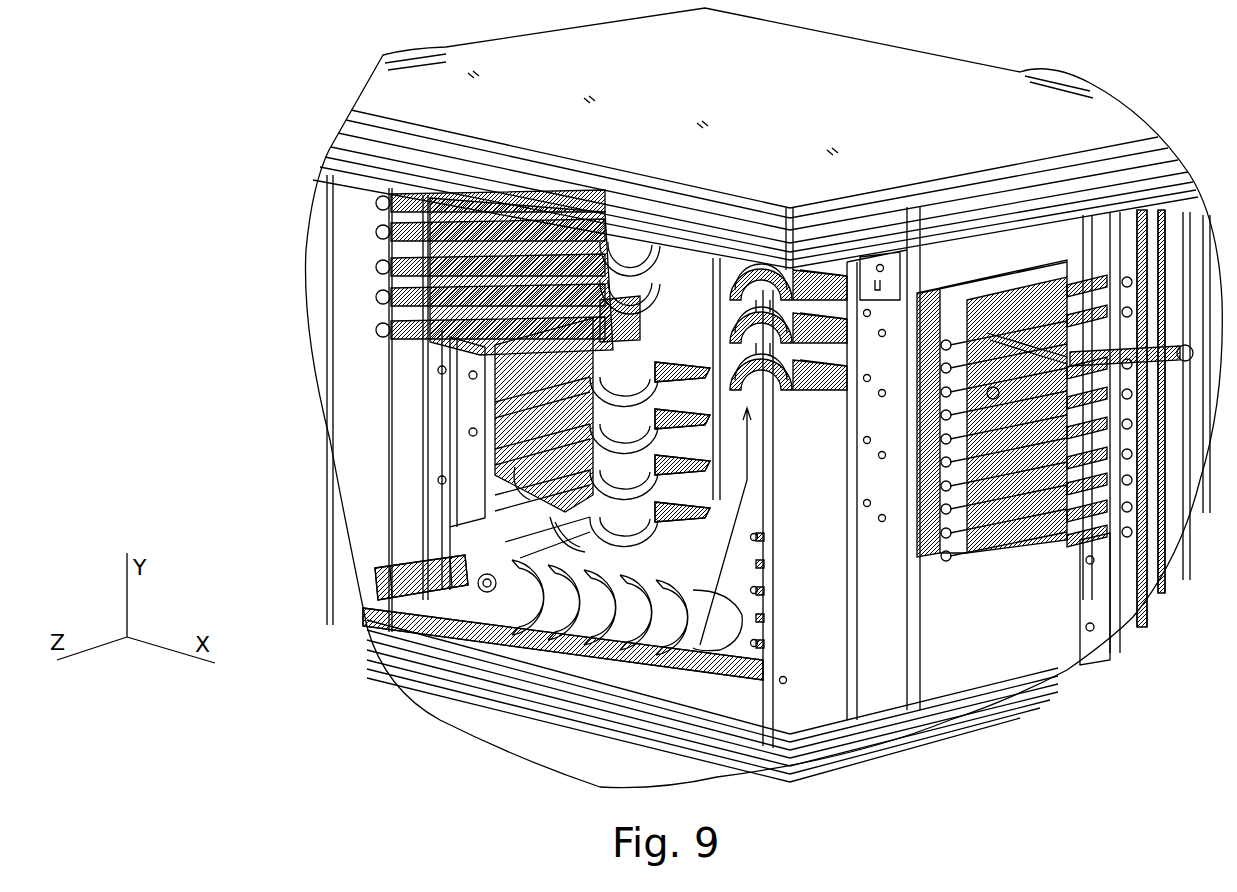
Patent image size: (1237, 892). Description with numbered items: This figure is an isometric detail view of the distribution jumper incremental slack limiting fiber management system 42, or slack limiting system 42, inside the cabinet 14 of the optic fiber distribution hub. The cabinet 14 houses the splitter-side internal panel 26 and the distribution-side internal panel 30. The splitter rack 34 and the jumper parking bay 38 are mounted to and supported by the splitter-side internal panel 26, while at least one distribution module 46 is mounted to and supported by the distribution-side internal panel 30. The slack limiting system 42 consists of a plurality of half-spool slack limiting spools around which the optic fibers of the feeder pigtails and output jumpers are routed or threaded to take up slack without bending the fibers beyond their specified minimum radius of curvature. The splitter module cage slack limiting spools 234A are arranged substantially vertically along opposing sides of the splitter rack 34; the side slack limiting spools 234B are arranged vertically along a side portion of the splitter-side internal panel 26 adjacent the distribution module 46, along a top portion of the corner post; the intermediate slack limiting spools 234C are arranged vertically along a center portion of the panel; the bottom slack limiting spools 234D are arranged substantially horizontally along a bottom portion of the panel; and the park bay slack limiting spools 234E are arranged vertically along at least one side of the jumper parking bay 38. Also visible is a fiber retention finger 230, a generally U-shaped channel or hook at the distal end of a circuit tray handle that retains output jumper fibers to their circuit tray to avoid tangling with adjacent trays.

The cabinet 14 is at (821, 85).
The splitter-side internal panel 26 is at (410, 713).
The distribution-side internal panel 30 is at (1010, 630).
The splitter rack 34 is at (547, 195).
The jumper parking bay 38 is at (445, 372).
The distribution jumper incremental slack limiting fiber management system 42 is at (378, 264).
The distribution module 46 is at (1011, 252).
The fiber retention finger 230 is at (905, 300).
The splitter module cage slack limiting spools 234A is at (380, 228).
The side slack limiting spools 234B is at (808, 262).
The intermediate slack limiting spools 234C is at (713, 300).
The bottom slack limiting spools 234D is at (375, 585).
The park bay slack limiting spools 234E is at (495, 428).